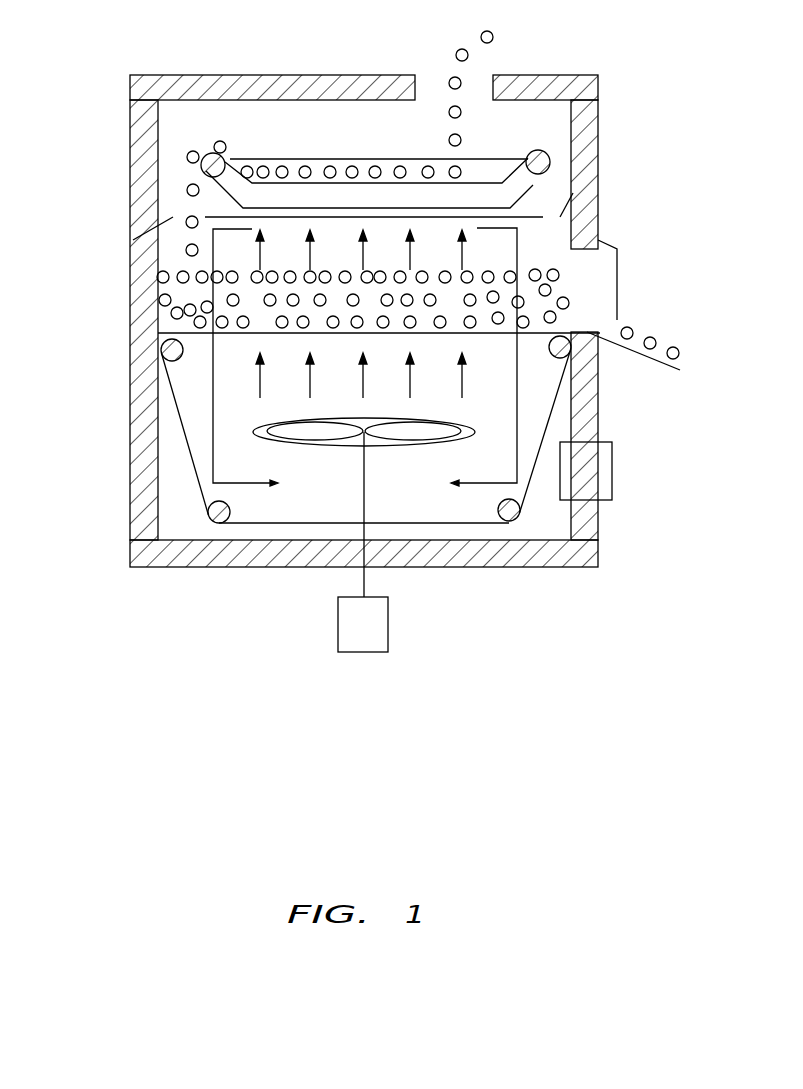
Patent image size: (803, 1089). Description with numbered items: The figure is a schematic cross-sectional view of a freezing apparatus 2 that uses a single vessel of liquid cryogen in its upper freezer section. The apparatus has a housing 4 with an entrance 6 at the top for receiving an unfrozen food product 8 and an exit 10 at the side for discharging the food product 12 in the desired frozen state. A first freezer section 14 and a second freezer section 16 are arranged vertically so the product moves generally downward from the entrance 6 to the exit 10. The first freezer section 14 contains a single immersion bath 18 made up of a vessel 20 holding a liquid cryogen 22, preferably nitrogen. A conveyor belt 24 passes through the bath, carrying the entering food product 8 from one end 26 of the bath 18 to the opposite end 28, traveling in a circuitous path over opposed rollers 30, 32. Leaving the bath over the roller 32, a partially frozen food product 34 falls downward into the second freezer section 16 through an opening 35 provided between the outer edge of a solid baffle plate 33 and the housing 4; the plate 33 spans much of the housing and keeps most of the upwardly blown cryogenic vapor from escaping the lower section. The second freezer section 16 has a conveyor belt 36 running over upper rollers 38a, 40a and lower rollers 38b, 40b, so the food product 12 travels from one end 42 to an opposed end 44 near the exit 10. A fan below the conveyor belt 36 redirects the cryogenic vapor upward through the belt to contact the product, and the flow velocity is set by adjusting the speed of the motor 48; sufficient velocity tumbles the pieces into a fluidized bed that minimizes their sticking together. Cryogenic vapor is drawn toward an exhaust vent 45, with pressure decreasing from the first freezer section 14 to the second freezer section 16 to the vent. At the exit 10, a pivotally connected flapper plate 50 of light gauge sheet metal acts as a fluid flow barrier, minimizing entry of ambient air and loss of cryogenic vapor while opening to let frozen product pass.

The freezing apparatus 2 is at (632, 108).
The housing 4 is at (593, 142).
The entrance 6 is at (477, 80).
The unfrozen food product 8 is at (492, 33).
The exit 10 is at (630, 292).
The food product 12 is at (558, 272).
The first freezer section 14 is at (210, 205).
The second freezer section 16 is at (200, 422).
The immersion bath 18 is at (328, 158).
The vessel 20 is at (523, 176).
The liquid cryogen 22 is at (477, 157).
The conveyor belt 24 is at (456, 220).
The one end of the bath 26 is at (523, 138).
The opposite end of the bath 28 is at (268, 135).
The roller 30 is at (548, 172).
The roller 32 is at (201, 170).
The solid baffle plate 33 is at (328, 218).
The partially frozen food product 34 is at (198, 250).
The opening 35 is at (140, 238).
The conveyor belt 36 is at (314, 338).
The upper roller 38a is at (178, 352).
The lower roller 38b is at (231, 510).
The upper roller 40a is at (560, 347).
The lower roller 40b is at (498, 512).
The one end of the conveyor belt 42 is at (193, 318).
The opposed end of the conveyor belt 44 is at (587, 318).
The exhaust vent 45 is at (601, 485).
The motor 48 is at (378, 639).
The flapper plate 50 is at (603, 238).